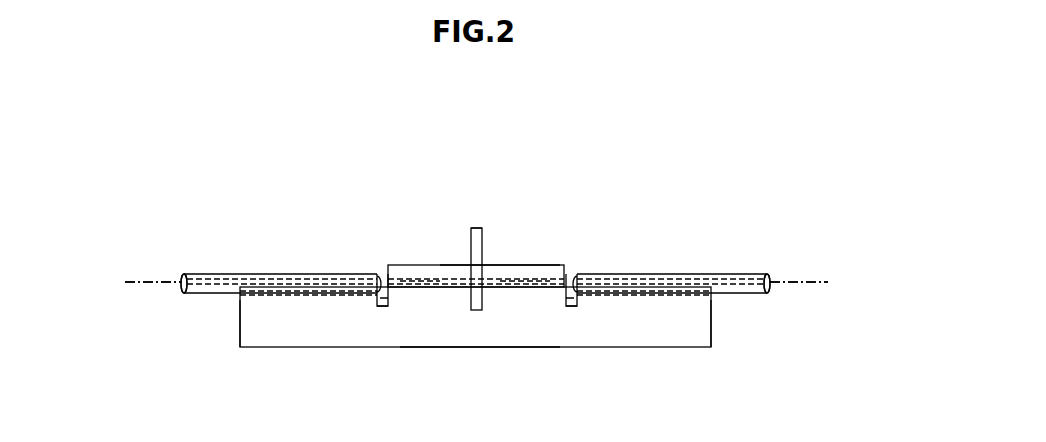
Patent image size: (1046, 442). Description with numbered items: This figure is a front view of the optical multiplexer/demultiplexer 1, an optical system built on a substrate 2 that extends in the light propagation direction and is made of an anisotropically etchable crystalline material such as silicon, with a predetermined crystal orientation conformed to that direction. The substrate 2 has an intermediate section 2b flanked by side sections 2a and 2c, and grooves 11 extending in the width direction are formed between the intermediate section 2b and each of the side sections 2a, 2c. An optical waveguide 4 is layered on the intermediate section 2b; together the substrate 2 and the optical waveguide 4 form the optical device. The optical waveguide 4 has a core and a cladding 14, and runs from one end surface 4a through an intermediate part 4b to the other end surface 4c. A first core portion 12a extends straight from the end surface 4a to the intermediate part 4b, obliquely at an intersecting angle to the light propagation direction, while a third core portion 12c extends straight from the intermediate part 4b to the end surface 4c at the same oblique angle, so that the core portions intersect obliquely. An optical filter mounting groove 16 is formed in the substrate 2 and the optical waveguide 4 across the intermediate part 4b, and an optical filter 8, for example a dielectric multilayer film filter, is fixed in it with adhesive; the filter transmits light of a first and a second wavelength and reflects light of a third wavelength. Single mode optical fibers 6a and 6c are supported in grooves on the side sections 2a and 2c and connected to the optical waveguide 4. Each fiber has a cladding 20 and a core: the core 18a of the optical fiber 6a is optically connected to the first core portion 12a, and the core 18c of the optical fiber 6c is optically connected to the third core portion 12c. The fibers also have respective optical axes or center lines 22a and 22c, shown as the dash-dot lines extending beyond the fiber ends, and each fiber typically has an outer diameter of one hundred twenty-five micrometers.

The optical multiplexer/demultiplexer 1 is at (733, 158).
The substrate 2 is at (422, 350).
The side section of substrate 2a is at (259, 348).
The intermediate section of substrate 2b is at (477, 348).
The side section of substrate 2c is at (655, 348).
The optical waveguide 4 is at (418, 262).
The end surface of optical waveguide 4a is at (383, 270).
The intermediate part of optical waveguide 4b is at (494, 234).
The other end surface of optical waveguide 4c is at (566, 265).
The optical fiber 6a is at (182, 277).
The optical fiber 6c is at (742, 273).
The optical filter 8 is at (477, 227).
The grooves 11 is at (388, 308).
The first core portion 12a is at (427, 282).
The third core portion 12c is at (522, 284).
The cladding 14 is at (512, 272).
The optical filter mounting groove 16 is at (470, 262).
The core of optical fiber 18a is at (242, 274).
The core of optical fiber 18c is at (627, 277).
The cladding 20 is at (217, 274).
The optical axis 22a is at (132, 287).
The optical axis 22c is at (812, 288).